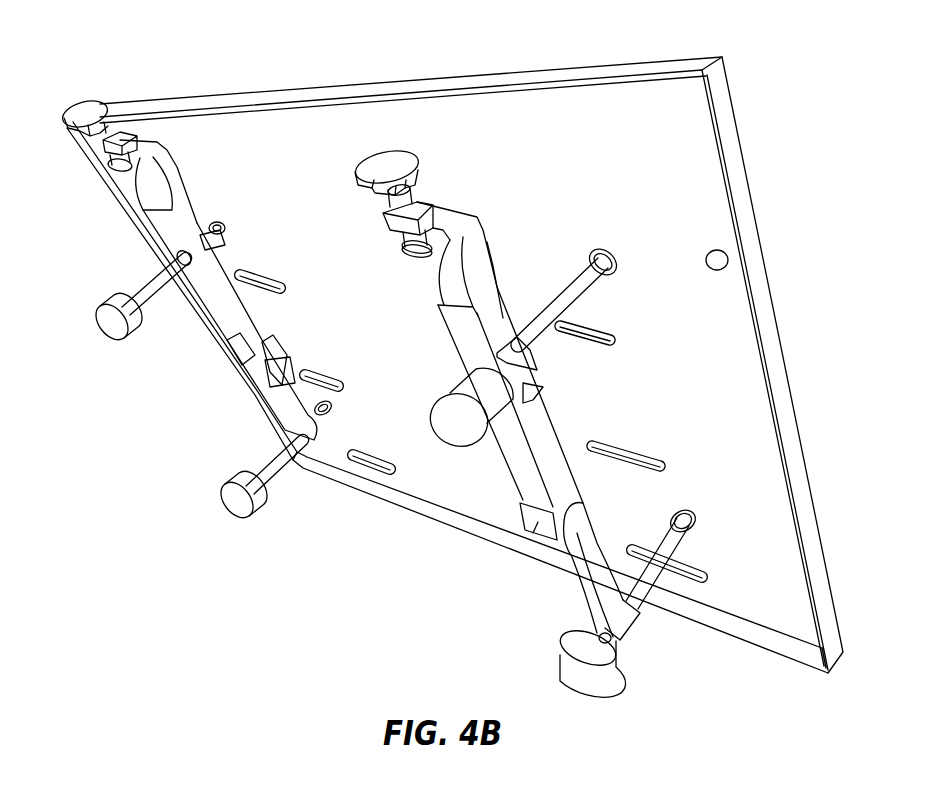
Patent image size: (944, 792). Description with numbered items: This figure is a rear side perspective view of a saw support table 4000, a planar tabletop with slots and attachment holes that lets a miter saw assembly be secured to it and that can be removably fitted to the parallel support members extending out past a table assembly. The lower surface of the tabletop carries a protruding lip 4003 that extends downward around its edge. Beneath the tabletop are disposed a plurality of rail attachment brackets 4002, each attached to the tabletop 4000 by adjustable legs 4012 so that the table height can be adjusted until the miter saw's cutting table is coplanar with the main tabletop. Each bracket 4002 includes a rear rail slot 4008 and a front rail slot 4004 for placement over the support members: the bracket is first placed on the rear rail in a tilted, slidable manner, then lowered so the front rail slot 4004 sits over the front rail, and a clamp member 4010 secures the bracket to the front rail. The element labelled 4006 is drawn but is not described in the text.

The saw support table 4000 is at (713, 580).
The protruding lip 4003 is at (733, 165).
The clamp member 4010 is at (377, 163).
The front rail slot 4004 is at (440, 272).
The rail attachment bracket 4002 is at (505, 464).
The adjustable legs 4012 is at (633, 553).
The rear rail slot 4008 is at (537, 523).
The clamp foot 4006 is at (558, 560).